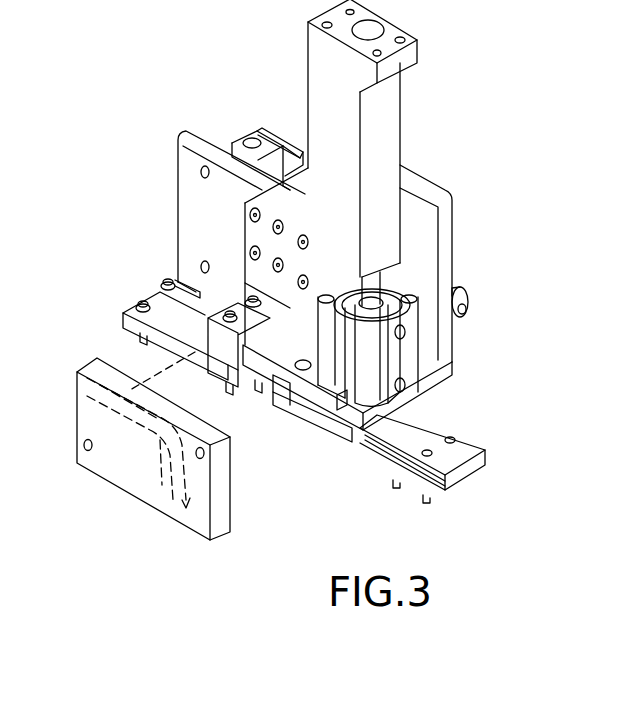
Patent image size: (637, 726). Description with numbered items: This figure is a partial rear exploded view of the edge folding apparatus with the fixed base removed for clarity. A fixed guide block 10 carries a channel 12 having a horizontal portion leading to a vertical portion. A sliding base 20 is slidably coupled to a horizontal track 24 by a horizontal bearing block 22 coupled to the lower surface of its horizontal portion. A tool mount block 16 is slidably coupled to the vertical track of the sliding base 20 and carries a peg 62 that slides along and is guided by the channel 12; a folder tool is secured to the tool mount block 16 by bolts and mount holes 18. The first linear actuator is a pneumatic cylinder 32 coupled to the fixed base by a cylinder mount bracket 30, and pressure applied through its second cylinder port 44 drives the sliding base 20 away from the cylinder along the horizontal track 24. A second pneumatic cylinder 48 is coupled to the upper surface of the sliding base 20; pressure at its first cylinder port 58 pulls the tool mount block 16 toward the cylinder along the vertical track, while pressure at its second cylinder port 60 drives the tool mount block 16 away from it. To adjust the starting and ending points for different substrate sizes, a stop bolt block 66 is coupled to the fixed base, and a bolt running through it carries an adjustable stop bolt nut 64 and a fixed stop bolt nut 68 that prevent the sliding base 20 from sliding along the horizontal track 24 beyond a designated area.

The fixed guide block 10 is at (85, 421).
The channel 12 is at (140, 480).
The tool mount block 16 is at (396, 124).
The mount holes 18 is at (404, 45).
The sliding base 20 is at (452, 222).
The horizontal bearing block 22 is at (296, 410).
The horizontal track 24 is at (468, 478).
The cylinder mount bracket 30 is at (185, 172).
The pneumatic cylinder 32 is at (274, 128).
The second cylinder port 44 is at (250, 135).
The second pneumatic cylinder 48 is at (347, 385).
The first cylinder port 58 is at (408, 331).
The second cylinder port 60 is at (410, 386).
The peg 62 is at (287, 280).
The adjustable stop bolt nut 64 is at (168, 284).
The stop bolt block 66 is at (172, 347).
The fixed stop bolt nut 68 is at (258, 388).